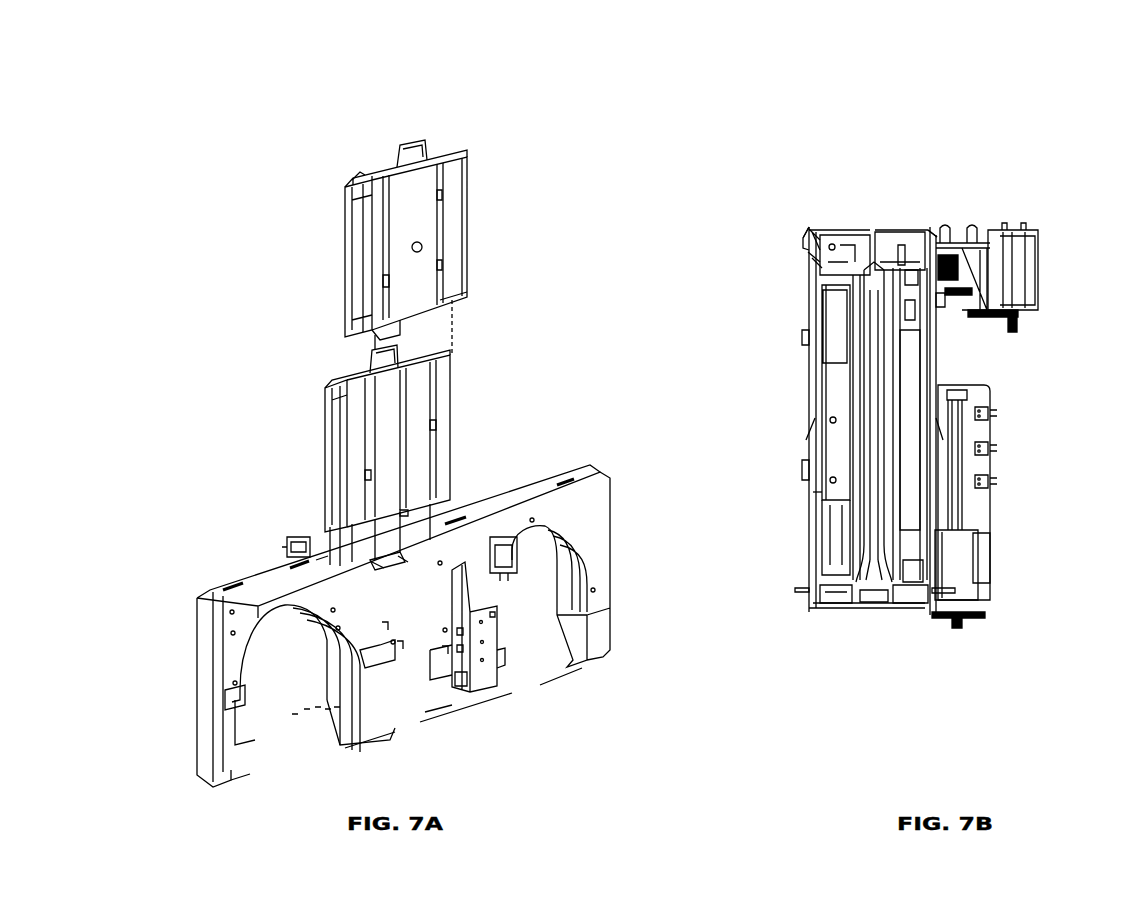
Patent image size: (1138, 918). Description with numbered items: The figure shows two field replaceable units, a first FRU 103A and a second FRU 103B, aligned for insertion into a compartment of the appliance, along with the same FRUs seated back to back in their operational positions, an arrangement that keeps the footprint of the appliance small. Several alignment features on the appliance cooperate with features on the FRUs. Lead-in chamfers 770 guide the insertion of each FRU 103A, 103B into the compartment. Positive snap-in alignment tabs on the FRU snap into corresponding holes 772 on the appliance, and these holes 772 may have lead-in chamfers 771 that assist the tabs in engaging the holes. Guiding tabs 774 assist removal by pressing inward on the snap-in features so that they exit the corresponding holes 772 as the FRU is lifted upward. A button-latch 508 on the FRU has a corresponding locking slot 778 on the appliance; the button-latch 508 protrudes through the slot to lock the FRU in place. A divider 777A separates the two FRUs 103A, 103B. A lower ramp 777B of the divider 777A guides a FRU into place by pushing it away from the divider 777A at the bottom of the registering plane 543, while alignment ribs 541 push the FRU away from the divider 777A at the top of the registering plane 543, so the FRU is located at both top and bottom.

In FIG. 7A, the FRU 103B is at (336, 185).
In FIG. 7A, the FRU 103A is at (320, 387).
In FIG. 7B, the alignment ribs 541 is at (808, 225).
In FIG. 7B, the button-latch 508 is at (810, 255).
In FIG. 7A, the lead-in chamfers 770 is at (322, 555).
In FIG. 7B, the lead-in chamfers 770 is at (933, 228).
In FIG. 7B, the divider 777A is at (873, 268).
In FIG. 7A, the guiding tabs 774 is at (445, 650).
In FIG. 7B, the guiding tabs 774 is at (665, 417).
In FIG. 7B, the registering plane 543 is at (815, 492).
In FIG. 7A, the locking slot 778 is at (405, 560).
In FIG. 7A, the lead-in chamfers 771 is at (337, 710).
In FIG. 7A, the corresponding holes 772 is at (390, 650).
In FIG. 7B, the lower ramp 777B is at (890, 548).